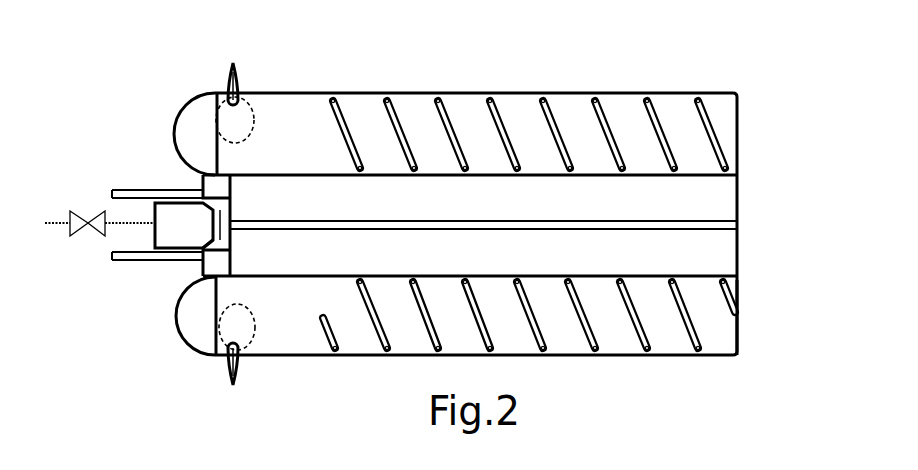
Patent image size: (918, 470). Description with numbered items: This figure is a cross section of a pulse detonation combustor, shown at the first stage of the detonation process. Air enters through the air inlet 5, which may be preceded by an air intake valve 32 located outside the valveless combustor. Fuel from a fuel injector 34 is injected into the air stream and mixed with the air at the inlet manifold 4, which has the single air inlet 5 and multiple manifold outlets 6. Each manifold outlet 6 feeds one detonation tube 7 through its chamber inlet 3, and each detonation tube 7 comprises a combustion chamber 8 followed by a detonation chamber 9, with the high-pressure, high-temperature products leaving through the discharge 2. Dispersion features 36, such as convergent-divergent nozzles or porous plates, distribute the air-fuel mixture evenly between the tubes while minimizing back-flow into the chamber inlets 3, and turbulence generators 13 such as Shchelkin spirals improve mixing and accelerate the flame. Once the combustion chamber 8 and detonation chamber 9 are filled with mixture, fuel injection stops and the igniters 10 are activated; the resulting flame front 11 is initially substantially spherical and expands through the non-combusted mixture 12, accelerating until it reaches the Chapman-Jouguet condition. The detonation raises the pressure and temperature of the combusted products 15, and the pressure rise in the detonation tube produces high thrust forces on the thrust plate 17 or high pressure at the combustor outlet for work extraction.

The discharge 2 is at (735, 128).
The chamber inlets 3 is at (232, 173).
The inlet manifold 4 is at (210, 188).
The air inlet 5 is at (155, 218).
The manifold outlets 6 is at (206, 284).
The detonation tube 7 is at (250, 355).
The combustion chamber 8 is at (276, 328).
The detonation chamber 9 is at (508, 333).
The igniters 10 is at (234, 64).
The flame front 11 is at (250, 110).
The non-combusted mixture 12 is at (310, 123).
The turbulence generators 13 is at (488, 96).
The combusted products 15 is at (226, 123).
The thrust plate 17 is at (183, 340).
The air intake valve 32 is at (86, 232).
The fuel injector 34 is at (127, 190).
The dispersion features 36 is at (210, 252).